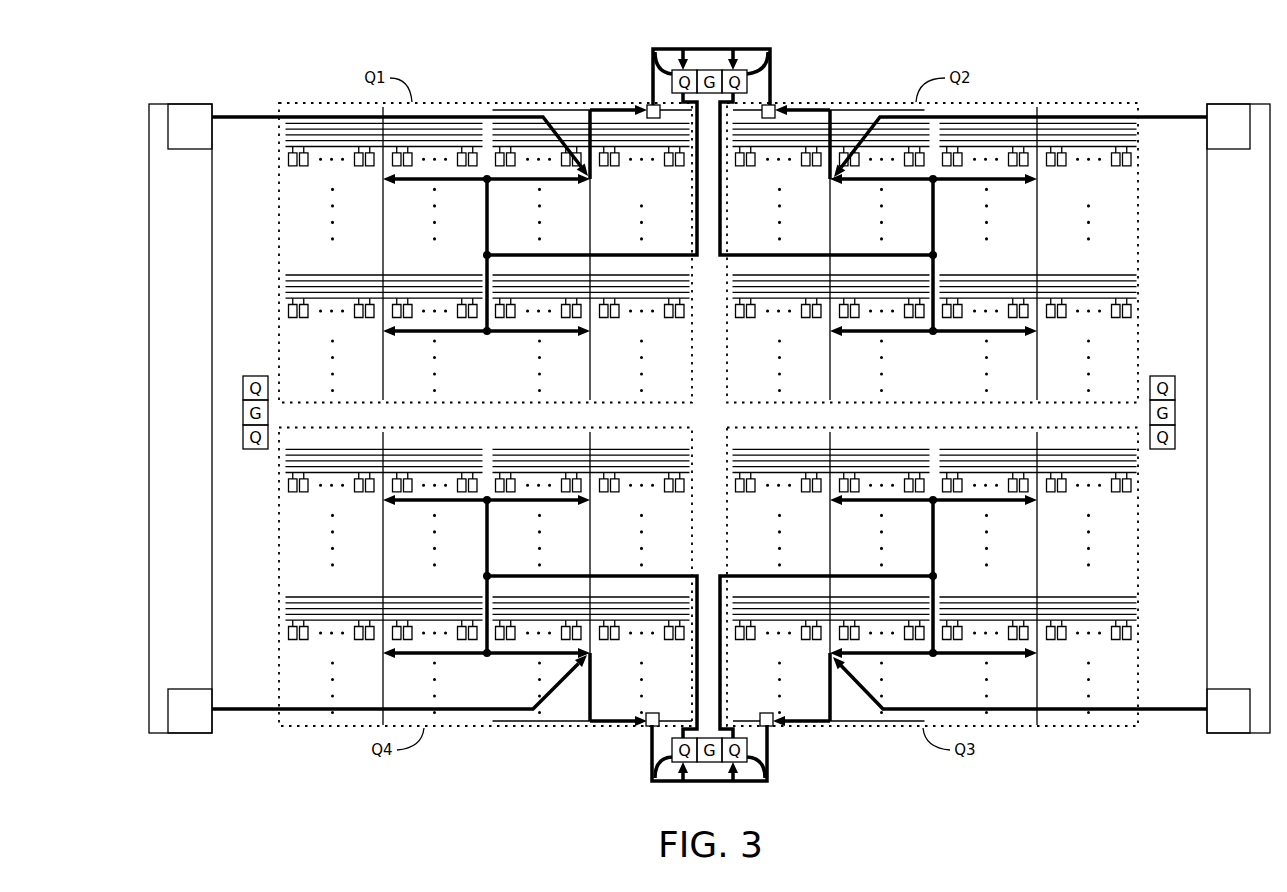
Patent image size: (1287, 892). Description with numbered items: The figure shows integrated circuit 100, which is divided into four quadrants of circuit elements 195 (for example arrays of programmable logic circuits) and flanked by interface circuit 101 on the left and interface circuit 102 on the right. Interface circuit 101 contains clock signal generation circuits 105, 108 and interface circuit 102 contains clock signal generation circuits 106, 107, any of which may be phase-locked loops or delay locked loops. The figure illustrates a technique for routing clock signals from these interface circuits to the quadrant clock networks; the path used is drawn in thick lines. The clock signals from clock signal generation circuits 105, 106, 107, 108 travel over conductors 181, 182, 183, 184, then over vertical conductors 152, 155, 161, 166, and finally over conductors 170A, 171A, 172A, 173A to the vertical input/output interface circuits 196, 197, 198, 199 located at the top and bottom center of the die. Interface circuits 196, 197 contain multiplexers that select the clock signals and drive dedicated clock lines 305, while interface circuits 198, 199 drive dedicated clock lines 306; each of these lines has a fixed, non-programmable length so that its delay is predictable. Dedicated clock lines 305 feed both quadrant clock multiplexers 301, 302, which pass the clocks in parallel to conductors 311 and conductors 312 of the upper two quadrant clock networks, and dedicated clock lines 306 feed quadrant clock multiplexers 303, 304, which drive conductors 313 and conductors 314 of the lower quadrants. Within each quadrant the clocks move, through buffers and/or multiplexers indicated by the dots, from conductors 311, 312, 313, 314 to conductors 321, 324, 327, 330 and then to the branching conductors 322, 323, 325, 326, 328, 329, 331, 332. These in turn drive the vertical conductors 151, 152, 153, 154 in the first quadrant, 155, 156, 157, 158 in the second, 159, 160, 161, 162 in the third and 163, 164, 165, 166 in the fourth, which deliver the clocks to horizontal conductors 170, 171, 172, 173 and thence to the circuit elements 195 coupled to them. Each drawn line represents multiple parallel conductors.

The integrated circuit 100 is at (501, 72).
The interface circuit 101 is at (212, 232).
The interface circuit 102 is at (1207, 250).
The clock signal generation circuit 105 is at (181, 103).
The clock signal generation circuit 106 is at (1222, 103).
The clock signal generation circuit 107 is at (1225, 733).
The clock signal generation circuit 108 is at (200, 733).
The vertical conductor 151 is at (383, 200).
The vertical conductor 152 is at (585, 118).
The vertical conductor 153 is at (385, 357).
The vertical conductor 154 is at (588, 357).
The vertical conductor 155 is at (833, 118).
The vertical conductor 156 is at (1035, 218).
The vertical conductor 157 is at (828, 357).
The vertical conductor 158 is at (1035, 355).
The vertical conductor 159 is at (834, 527).
The vertical conductor 160 is at (1037, 562).
The vertical conductor 161 is at (833, 708).
The vertical conductor 162 is at (1035, 665).
The vertical conductor 163 is at (384, 540).
The vertical conductor 164 is at (592, 545).
The vertical conductor 165 is at (382, 668).
The vertical conductor 166 is at (588, 708).
The horizontal conductor 170 is at (329, 156).
The horizontal conductor 171 is at (1082, 152).
The horizontal conductor 172 is at (995, 448).
The horizontal conductor 173 is at (548, 449).
The conductor 170A is at (640, 110).
The conductor 171A is at (790, 110).
The conductor 172A is at (792, 724).
The conductor 173A is at (640, 724).
The conductor 181 is at (333, 116).
The conductor 182 is at (1072, 116).
The conductor 183 is at (1090, 712).
The conductor 184 is at (328, 712).
The circuit element 195 is at (294, 166).
The vertical input/output interface circuit 196 is at (650, 103).
The vertical input/output interface circuit 197 is at (771, 103).
The vertical input/output interface circuit 198 is at (765, 712).
The vertical input/output interface circuit 199 is at (655, 712).
The quadrant clock multiplexer 301 is at (656, 58).
The quadrant clock multiplexer 302 is at (767, 57).
The quadrant clock multiplexer 303 is at (768, 765).
The quadrant clock multiplexer 304 is at (652, 776).
The dedicated clock line 305 is at (720, 48).
The dedicated clock line 306 is at (765, 782).
The conductor 311 is at (662, 250).
The conductor 312 is at (805, 250).
The conductor 313 is at (722, 572).
The conductor 314 is at (665, 572).
The conductor 321 is at (485, 225).
The conductor 322 is at (495, 181).
The conductor 323 is at (488, 333).
The conductor 324 is at (937, 222).
The conductor 325 is at (922, 181).
The conductor 326 is at (930, 333).
The conductor 327 is at (937, 598).
The conductor 328 is at (990, 502).
The conductor 329 is at (920, 655).
The conductor 330 is at (485, 548).
The conductor 331 is at (540, 502).
The conductor 332 is at (488, 655).